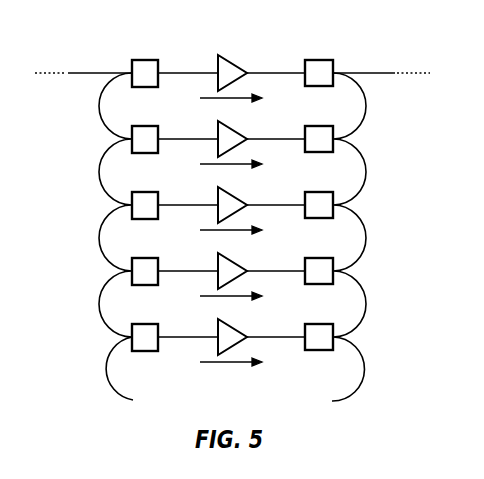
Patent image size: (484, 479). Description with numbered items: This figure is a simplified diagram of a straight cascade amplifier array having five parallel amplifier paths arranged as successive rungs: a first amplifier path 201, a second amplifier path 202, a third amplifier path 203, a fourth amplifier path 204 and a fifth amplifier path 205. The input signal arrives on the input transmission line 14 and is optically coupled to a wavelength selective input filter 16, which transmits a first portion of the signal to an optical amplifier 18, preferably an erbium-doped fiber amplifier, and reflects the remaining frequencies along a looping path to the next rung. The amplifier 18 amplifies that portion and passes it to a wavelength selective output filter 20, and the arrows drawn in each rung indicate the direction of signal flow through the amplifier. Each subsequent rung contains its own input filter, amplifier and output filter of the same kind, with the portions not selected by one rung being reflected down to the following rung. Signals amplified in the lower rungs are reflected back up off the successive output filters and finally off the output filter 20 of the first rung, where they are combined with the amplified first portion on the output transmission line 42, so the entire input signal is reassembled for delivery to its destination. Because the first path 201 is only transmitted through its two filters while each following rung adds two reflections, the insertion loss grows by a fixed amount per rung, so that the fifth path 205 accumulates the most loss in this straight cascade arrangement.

The input optical fiber 14 is at (100, 72).
The wavelength selective input filter 16 is at (146, 60).
The optical amplifier 18 is at (233, 55).
The wavelength selective output filter 20 is at (318, 60).
The output transmission line 42 is at (365, 72).
The first amplifier path 201 is at (228, 99).
The second amplifier path 202 is at (228, 165).
The third amplifier path 203 is at (228, 231).
The fourth amplifier path 204 is at (228, 297).
The fifth amplifier path 205 is at (228, 363).